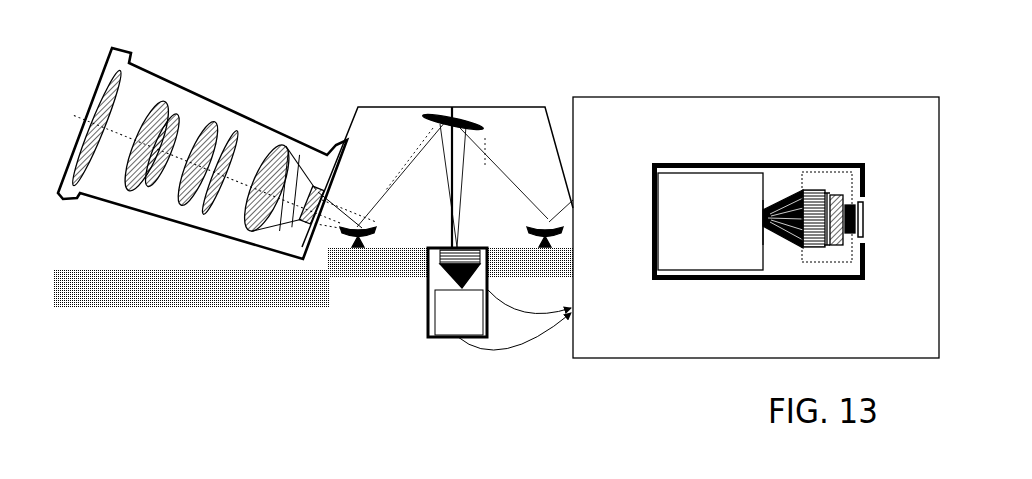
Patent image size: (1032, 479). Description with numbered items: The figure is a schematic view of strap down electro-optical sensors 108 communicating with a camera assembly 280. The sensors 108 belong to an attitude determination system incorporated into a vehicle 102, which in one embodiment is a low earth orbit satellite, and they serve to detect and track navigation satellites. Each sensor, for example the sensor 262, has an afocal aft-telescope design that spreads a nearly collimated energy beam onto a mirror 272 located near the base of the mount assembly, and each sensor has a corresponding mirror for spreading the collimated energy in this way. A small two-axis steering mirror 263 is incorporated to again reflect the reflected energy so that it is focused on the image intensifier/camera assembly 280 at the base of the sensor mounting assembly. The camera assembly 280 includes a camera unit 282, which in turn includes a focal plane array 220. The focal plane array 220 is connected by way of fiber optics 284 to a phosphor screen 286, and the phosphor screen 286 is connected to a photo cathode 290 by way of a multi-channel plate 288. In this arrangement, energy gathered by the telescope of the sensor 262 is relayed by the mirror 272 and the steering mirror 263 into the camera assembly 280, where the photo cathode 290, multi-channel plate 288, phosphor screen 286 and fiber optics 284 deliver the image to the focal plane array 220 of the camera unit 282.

The vehicle 102 is at (148, 307).
The strap down electro-optical sensors 108 is at (368, 346).
The sensor 262 is at (184, 226).
The two-axis steering mirror 263 is at (423, 118).
The mirror 272 is at (378, 232).
The camera assembly 280 is at (882, 95).
The camera unit 282 is at (660, 258).
The focal plane array (FPA) 220 is at (757, 227).
The fiber optics 284 is at (781, 242).
The phosphor screen 286 is at (811, 254).
The multi-channel plate 288 is at (845, 258).
The photo cathode 290 is at (861, 243).